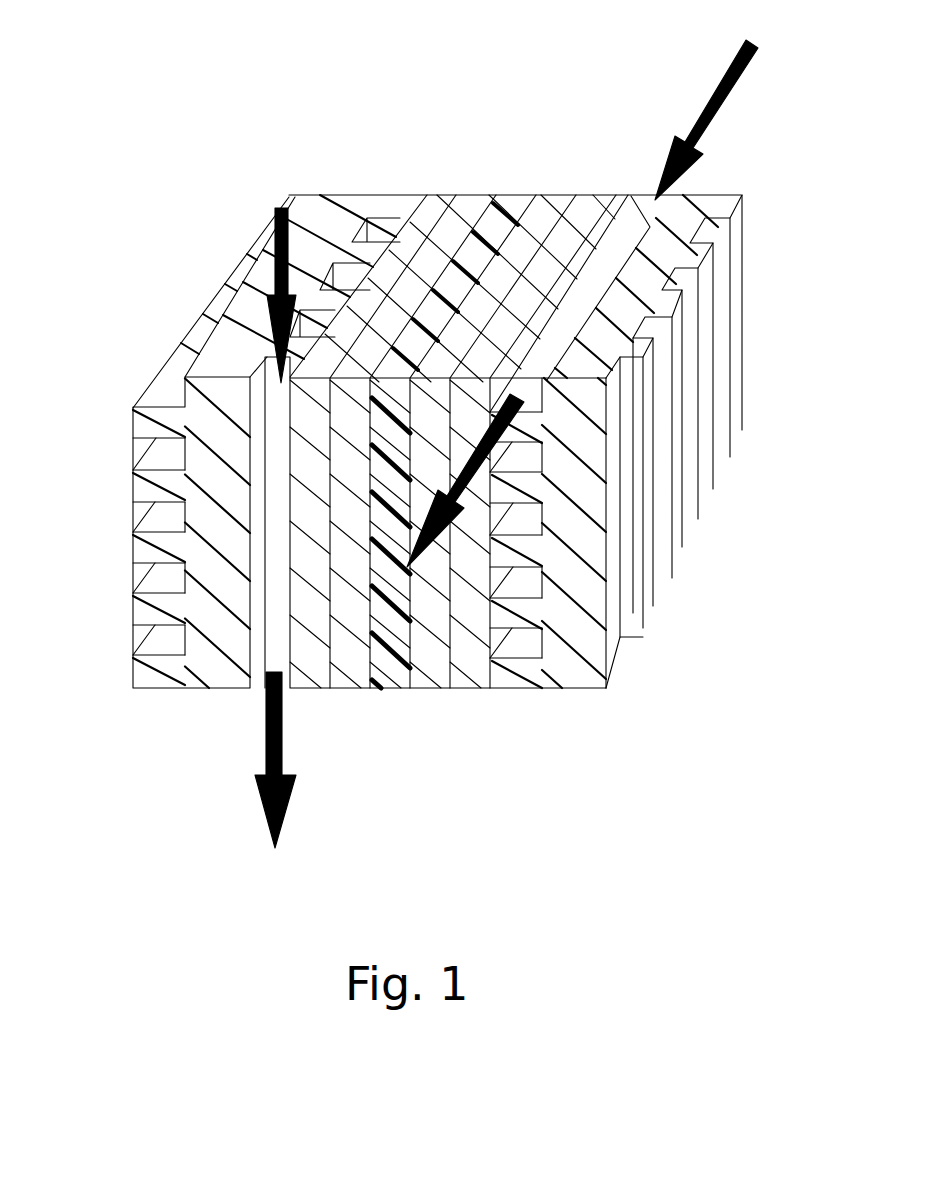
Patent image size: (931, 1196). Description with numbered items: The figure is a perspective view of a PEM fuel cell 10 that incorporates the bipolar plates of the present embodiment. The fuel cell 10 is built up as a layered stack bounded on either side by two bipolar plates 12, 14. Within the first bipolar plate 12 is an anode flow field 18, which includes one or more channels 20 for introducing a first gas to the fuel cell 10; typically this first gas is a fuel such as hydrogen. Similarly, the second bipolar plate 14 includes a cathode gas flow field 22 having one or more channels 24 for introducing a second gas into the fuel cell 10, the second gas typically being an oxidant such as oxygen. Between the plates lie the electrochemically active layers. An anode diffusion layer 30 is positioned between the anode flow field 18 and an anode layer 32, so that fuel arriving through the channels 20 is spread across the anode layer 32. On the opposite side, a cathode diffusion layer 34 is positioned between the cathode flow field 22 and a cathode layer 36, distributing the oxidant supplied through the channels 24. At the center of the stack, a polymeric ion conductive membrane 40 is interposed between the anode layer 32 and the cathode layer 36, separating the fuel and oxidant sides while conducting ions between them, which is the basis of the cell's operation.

The PEM fuel cell 10 is at (235, 153).
The bipolar plate 12 is at (220, 288).
The bipolar plate 14 is at (742, 312).
The anode flow field 18 is at (343, 215).
The channels 20 is at (385, 228).
The cathode gas flow field 22 is at (693, 205).
The channels 24 is at (515, 642).
The anode diffusion layer 30 is at (445, 190).
The anode layer 32 is at (500, 192).
The cathode diffusion layer 34 is at (613, 192).
The cathode layer 36 is at (565, 192).
The polymeric ion conductive membrane 40 is at (537, 192).